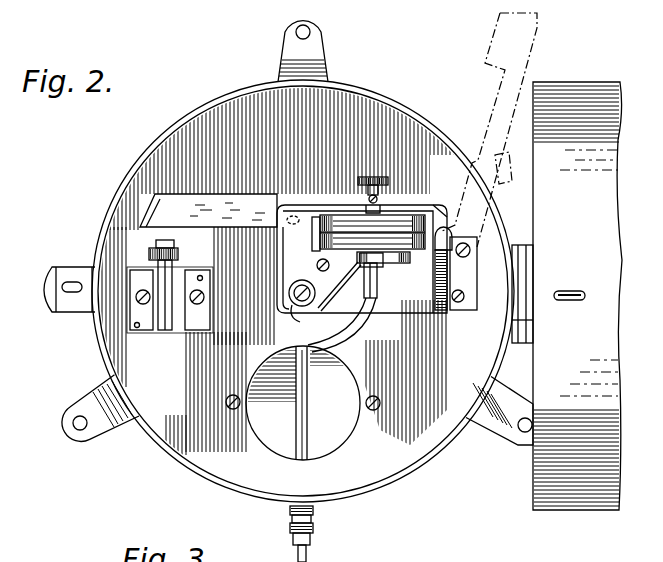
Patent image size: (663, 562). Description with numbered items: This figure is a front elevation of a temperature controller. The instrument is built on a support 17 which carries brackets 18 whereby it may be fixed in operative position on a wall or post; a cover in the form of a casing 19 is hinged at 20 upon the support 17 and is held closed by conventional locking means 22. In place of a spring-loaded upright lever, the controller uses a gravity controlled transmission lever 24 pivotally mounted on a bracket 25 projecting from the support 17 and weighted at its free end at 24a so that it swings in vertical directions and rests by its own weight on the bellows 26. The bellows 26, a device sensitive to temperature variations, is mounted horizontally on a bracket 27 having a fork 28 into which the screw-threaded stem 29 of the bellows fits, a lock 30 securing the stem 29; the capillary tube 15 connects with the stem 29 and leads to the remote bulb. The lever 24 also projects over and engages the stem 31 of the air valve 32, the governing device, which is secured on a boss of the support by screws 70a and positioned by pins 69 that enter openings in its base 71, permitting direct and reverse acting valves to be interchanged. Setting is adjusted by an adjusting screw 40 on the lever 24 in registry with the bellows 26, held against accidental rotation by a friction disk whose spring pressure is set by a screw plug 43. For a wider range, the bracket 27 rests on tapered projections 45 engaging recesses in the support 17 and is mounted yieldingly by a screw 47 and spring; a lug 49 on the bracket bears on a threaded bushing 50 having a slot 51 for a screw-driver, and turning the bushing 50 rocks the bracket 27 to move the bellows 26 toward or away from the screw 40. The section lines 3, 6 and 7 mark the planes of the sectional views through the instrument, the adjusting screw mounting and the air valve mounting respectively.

The section line 3— 3 is at (303, 26).
The section line 6— 6 is at (398, 199).
The section line 7— 7 is at (168, 231).
The capillary tube 15 is at (308, 406).
The support 17 is at (117, 207).
The brackets 18 is at (326, 58).
The casing 19 is at (584, 506).
The hinge 20 is at (530, 255).
The locking means 22 is at (72, 313).
The transmission lever 24 is at (338, 196).
The weight 24a is at (208, 210).
The bracket 25 is at (452, 258).
The bellows 26 is at (400, 218).
The bracket 27 is at (390, 261).
The fork 28 is at (392, 266).
The stem 29 is at (364, 283).
The lock 30 is at (377, 301).
The stem 31 is at (168, 232).
The air valve 32 is at (166, 333).
The adjusting screw 40 is at (384, 178).
The screw plug 43 is at (378, 197).
The tapered projections 45 is at (470, 240).
The screw 47 is at (317, 265).
The lug 49 is at (284, 319).
The bushing 50 is at (289, 293).
The slot 51 is at (325, 298).
The pins 69 is at (136, 329).
The screws 70a is at (197, 314).
The base 71 is at (131, 279).